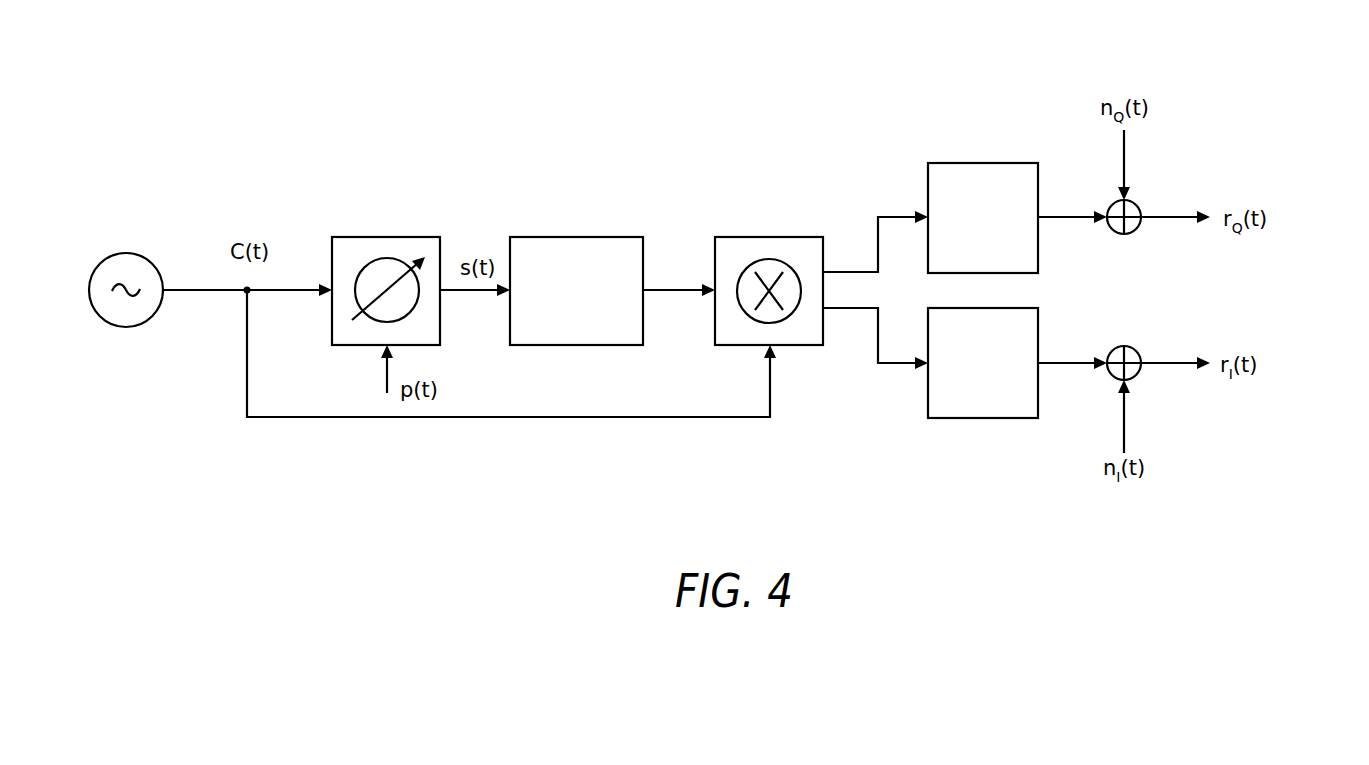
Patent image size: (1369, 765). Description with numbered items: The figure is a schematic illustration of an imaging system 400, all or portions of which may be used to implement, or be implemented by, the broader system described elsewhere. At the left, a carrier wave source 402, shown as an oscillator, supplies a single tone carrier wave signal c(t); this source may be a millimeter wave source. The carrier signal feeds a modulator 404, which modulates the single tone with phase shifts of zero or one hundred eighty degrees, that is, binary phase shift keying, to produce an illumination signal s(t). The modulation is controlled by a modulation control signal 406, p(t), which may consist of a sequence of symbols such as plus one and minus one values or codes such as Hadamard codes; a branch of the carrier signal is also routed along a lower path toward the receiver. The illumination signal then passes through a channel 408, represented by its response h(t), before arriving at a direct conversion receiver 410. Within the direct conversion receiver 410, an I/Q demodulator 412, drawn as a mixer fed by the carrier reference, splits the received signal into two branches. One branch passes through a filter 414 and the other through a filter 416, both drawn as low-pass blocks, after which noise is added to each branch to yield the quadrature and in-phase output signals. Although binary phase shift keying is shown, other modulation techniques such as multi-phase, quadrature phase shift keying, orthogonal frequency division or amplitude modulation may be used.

The imaging system 400 is at (1226, 44).
The carrier wave source 402 is at (127, 255).
The modulator 404 is at (343, 237).
The modulation control signal 406 is at (511, 354).
The channel 408 is at (577, 237).
The direct conversion receiver 410 is at (860, 162).
The I/Q demodulator 412 is at (770, 237).
The filter 414 is at (982, 163).
The filter 416 is at (982, 418).